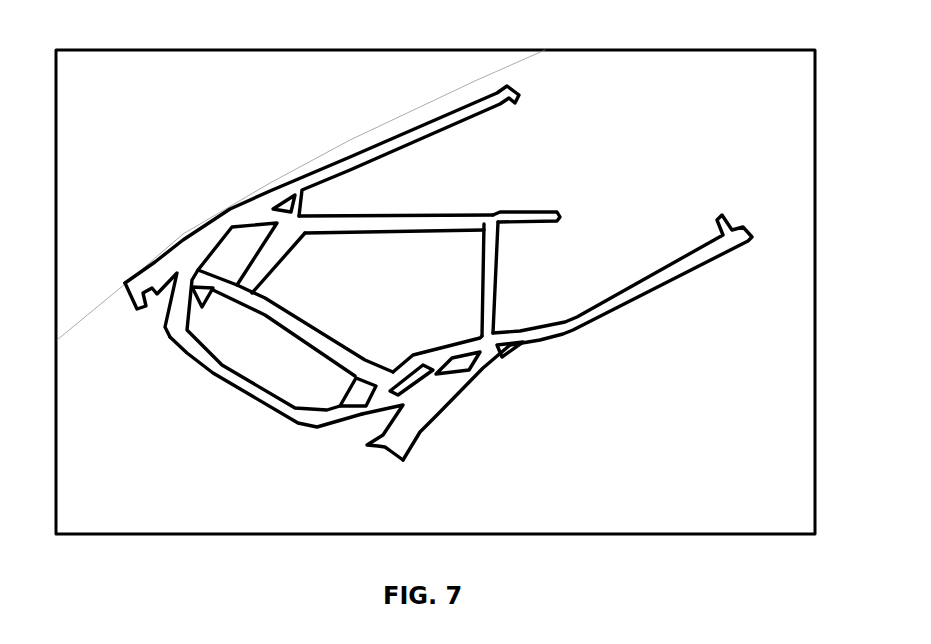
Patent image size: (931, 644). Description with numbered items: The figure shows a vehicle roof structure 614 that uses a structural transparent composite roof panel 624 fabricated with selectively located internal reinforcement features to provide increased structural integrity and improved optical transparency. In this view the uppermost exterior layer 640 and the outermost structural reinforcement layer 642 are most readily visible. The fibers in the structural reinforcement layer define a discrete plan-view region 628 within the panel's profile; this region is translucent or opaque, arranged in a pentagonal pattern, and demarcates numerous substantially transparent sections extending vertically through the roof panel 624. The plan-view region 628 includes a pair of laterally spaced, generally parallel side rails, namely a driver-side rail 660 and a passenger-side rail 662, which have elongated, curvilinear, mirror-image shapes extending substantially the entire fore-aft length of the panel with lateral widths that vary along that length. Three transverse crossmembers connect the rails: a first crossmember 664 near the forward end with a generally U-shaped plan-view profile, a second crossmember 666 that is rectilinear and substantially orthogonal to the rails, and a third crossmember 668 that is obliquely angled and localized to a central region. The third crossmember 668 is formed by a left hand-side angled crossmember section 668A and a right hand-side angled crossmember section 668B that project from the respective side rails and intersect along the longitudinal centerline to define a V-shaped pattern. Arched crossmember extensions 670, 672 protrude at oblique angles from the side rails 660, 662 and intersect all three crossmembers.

The vehicle roof structure 614 is at (205, 149).
The structural transparent composite roof panel 624 is at (229, 387).
The plan-view region 628 is at (545, 117).
The uppermost exterior layer 640 is at (155, 297).
The outermost structural reinforcement layer 642 is at (188, 258).
The driver-side rail 660 is at (587, 320).
The passenger-side rail 662 is at (280, 197).
The first crossmember 664 is at (203, 370).
The second crossmember 666 is at (338, 352).
The third crossmember 668 is at (520, 213).
The left hand-side angled crossmember section 668A is at (487, 271).
The right hand-side angled crossmember section 668B is at (380, 222).
The arched crossmember extension 670 is at (457, 353).
The arched crossmember extension 672 is at (227, 240).